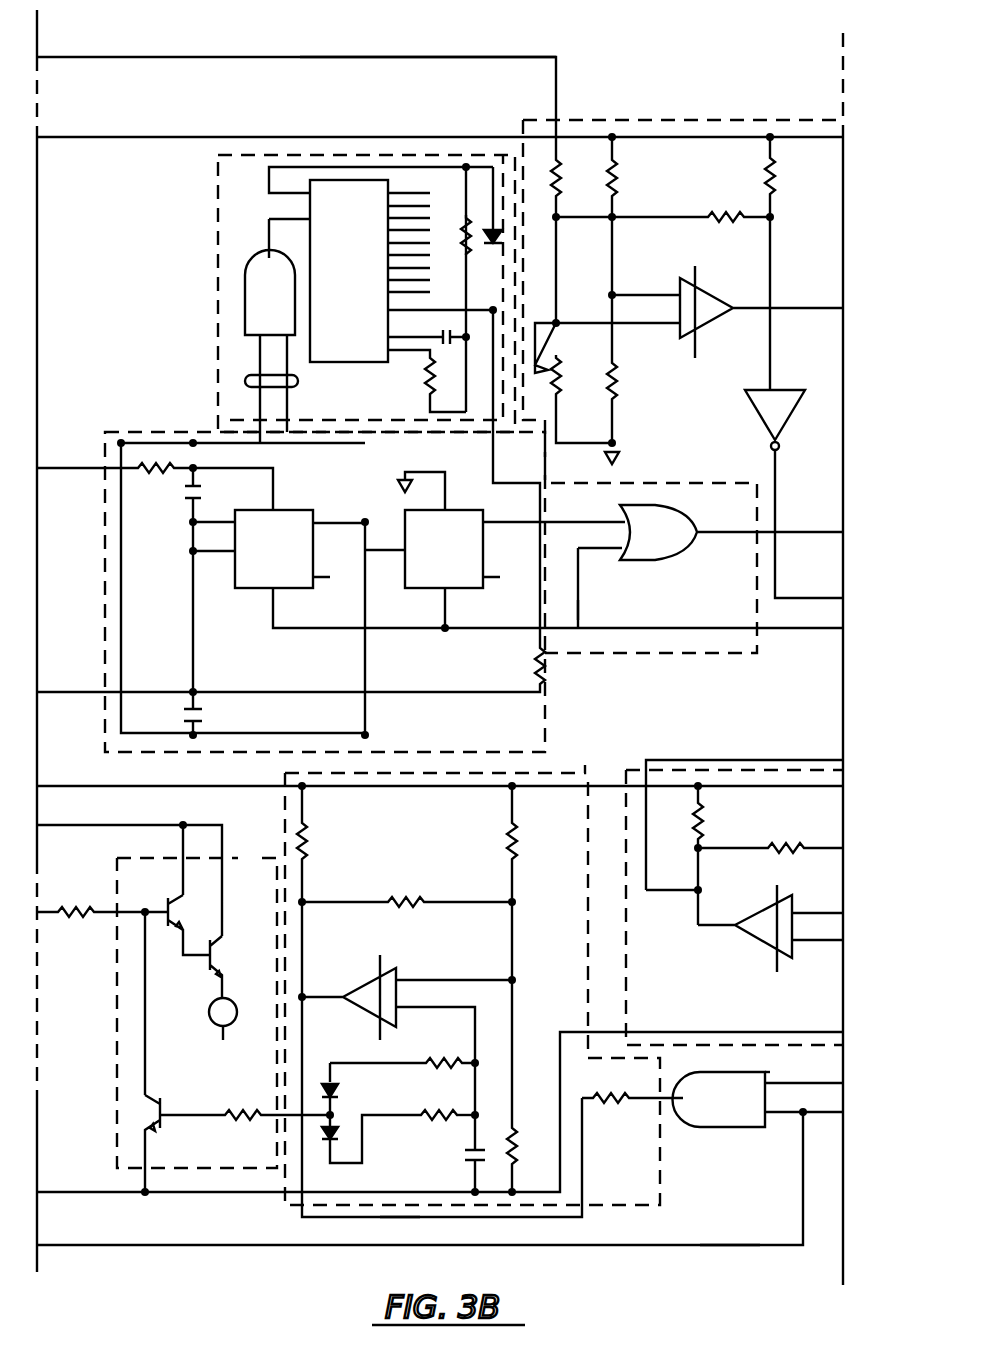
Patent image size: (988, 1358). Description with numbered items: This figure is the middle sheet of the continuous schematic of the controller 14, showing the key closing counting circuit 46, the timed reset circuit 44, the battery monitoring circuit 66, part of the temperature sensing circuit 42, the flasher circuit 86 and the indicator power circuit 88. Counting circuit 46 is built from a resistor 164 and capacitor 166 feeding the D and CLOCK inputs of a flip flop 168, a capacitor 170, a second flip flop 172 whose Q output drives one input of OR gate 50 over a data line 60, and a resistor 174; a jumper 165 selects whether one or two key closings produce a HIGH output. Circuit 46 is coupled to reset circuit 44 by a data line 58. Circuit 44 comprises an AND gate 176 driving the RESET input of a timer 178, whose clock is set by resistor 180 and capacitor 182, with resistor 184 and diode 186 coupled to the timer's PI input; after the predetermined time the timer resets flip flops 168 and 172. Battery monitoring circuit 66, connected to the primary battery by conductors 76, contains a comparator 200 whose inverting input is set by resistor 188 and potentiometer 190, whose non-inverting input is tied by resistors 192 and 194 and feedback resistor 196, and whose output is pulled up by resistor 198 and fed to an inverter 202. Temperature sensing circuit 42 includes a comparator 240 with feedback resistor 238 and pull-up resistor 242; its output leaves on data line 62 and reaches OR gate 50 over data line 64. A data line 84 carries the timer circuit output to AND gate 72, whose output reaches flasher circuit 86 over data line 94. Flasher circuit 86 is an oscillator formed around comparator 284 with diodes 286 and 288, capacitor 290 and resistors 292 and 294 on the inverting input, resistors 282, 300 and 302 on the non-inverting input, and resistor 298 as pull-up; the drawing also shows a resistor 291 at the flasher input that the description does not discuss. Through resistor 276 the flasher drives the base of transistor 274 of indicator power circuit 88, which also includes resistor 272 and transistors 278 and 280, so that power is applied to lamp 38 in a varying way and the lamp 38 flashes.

The controller 14 is at (650, 1250).
The lamp 38 is at (227, 1026).
The temperature sensing circuit 42 is at (747, 765).
The timed reset circuit 44 is at (350, 155).
The key closing counting circuit 46 is at (105, 432).
The OR gate 50 is at (686, 550).
The data line 58 is at (245, 375).
The data line 60 is at (584, 525).
The data line 62 is at (673, 760).
The data line 64 is at (579, 608).
The battery monitoring circuit 66 is at (768, 120).
The AND gate 72 is at (737, 1128).
The conductors 76 is at (515, 57).
The data line 84 is at (812, 1084).
The flasher circuit 86 is at (573, 772).
The indicator power circuit 88 is at (247, 856).
The data line 94 is at (410, 1217).
The resistor 164 is at (135, 485).
The jumper 165 is at (190, 447).
The capacitor 166 is at (180, 502).
The flip flop 168 is at (255, 592).
The capacitor 170 is at (180, 715).
The flip flop 172 is at (462, 588).
The resistor 174 is at (528, 670).
The AND gate 176 is at (245, 270).
The timer 178 is at (343, 362).
The resistor 180 is at (418, 392).
The capacitor 182 is at (422, 325).
The resistor 184 is at (453, 215).
The diode 186 is at (486, 223).
The resistor 188 is at (608, 185).
The potentiometer 190 is at (584, 375).
The resistor 192 is at (616, 393).
The resistor 194 is at (620, 192).
The resistor 196 is at (715, 228).
The resistor 198 is at (773, 184).
The comparator 200 is at (708, 288).
The inverter 202 is at (795, 387).
The resistor 238 is at (762, 857).
The comparator 240 is at (755, 953).
The resistor 242 is at (710, 825).
The resistor 272 is at (88, 926).
The transistor 274 is at (168, 1125).
The resistor 276 is at (250, 1122).
The transistor 278 is at (165, 905).
The transistor 280 is at (202, 976).
The resistor 282 is at (377, 907).
The comparator 284 is at (402, 960).
The diode 286 is at (326, 1080).
The diode 288 is at (355, 1135).
The capacitor 290 is at (463, 1162).
The resistor R12 291 is at (620, 1105).
The resistor 292 is at (443, 1127).
The resistor 294 is at (420, 1061).
The resistor 298 is at (312, 852).
The resistor 300 is at (518, 1127).
The resistor 302 is at (522, 852).